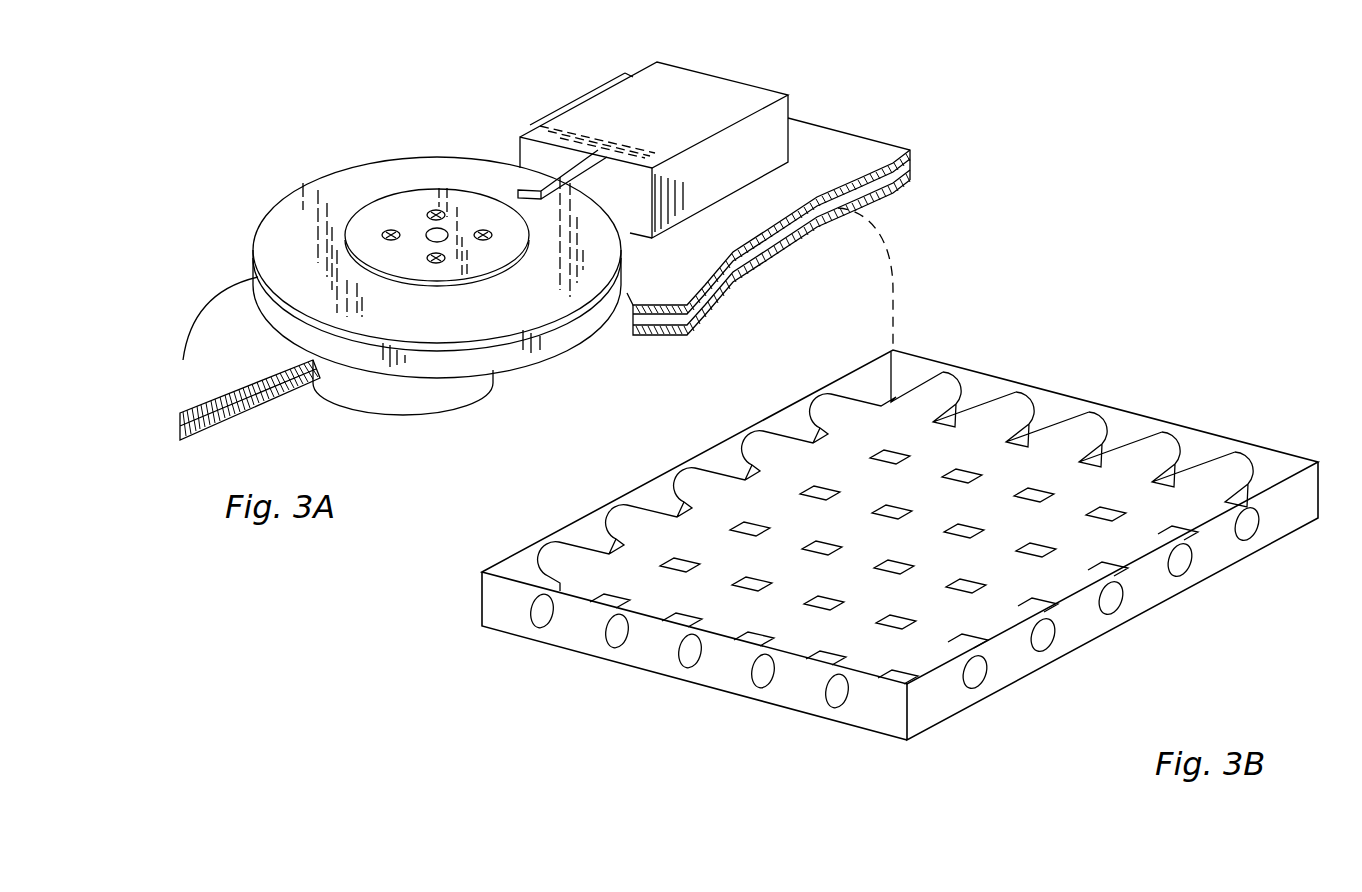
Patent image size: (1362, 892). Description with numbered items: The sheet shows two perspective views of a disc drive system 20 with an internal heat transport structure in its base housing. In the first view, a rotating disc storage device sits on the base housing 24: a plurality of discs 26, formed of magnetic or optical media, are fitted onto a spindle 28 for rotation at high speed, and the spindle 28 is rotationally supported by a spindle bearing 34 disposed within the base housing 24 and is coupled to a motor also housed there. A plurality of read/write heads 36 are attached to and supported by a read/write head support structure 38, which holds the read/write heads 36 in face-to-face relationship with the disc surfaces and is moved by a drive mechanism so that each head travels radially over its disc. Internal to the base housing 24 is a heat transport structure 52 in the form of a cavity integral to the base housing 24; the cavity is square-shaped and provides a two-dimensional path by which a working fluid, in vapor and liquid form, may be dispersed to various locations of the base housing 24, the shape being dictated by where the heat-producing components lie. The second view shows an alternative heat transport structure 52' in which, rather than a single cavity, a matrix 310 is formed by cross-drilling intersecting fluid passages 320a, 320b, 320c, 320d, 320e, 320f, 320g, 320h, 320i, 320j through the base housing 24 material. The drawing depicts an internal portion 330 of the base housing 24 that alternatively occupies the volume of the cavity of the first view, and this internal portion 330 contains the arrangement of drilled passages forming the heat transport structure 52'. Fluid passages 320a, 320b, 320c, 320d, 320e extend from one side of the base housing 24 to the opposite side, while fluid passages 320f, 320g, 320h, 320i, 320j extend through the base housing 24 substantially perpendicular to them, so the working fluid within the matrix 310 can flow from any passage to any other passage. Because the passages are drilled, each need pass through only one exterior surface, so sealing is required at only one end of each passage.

In FIG. 3A, the disc drive system 20 is at (263, 118).
In FIG. 3A, the discs 26 is at (393, 158).
In FIG. 3A, the spindle 28 is at (486, 258).
In FIG. 3A, the spindle bearing 34 is at (375, 405).
In FIG. 3A, the read/write heads 36 is at (530, 201).
In FIG. 3A, the read/write head support structure 38 is at (540, 190).
In FIG. 3A, the base housing 24 is at (742, 256).
In FIG. 3B, the base housing 24 is at (1127, 425).
In FIG. 3A, the heat transport structure 52 is at (771, 244).
In FIG. 3B, the heat transport structure 52' is at (875, 506).
In FIG. 3B, the matrix 310 is at (650, 530).
In FIG. 3B, the fluid passage 320a is at (533, 615).
In FIG. 3B, the fluid passage 320b is at (607, 635).
In FIG. 3B, the fluid passage 320c is at (680, 653).
In FIG. 3B, the fluid passage 320d is at (753, 673).
In FIG. 3B, the fluid passage 320e is at (830, 693).
In FIG. 3B, the fluid passage 320f is at (980, 675).
In FIG. 3B, the fluid passage 320g is at (1050, 637).
In FIG. 3B, the fluid passage 320h is at (1120, 600).
In FIG. 3B, the fluid passage 320i is at (1190, 567).
In FIG. 3B, the fluid passage 320j is at (1253, 527).
In FIG. 3B, the internal portion 330 is at (493, 607).